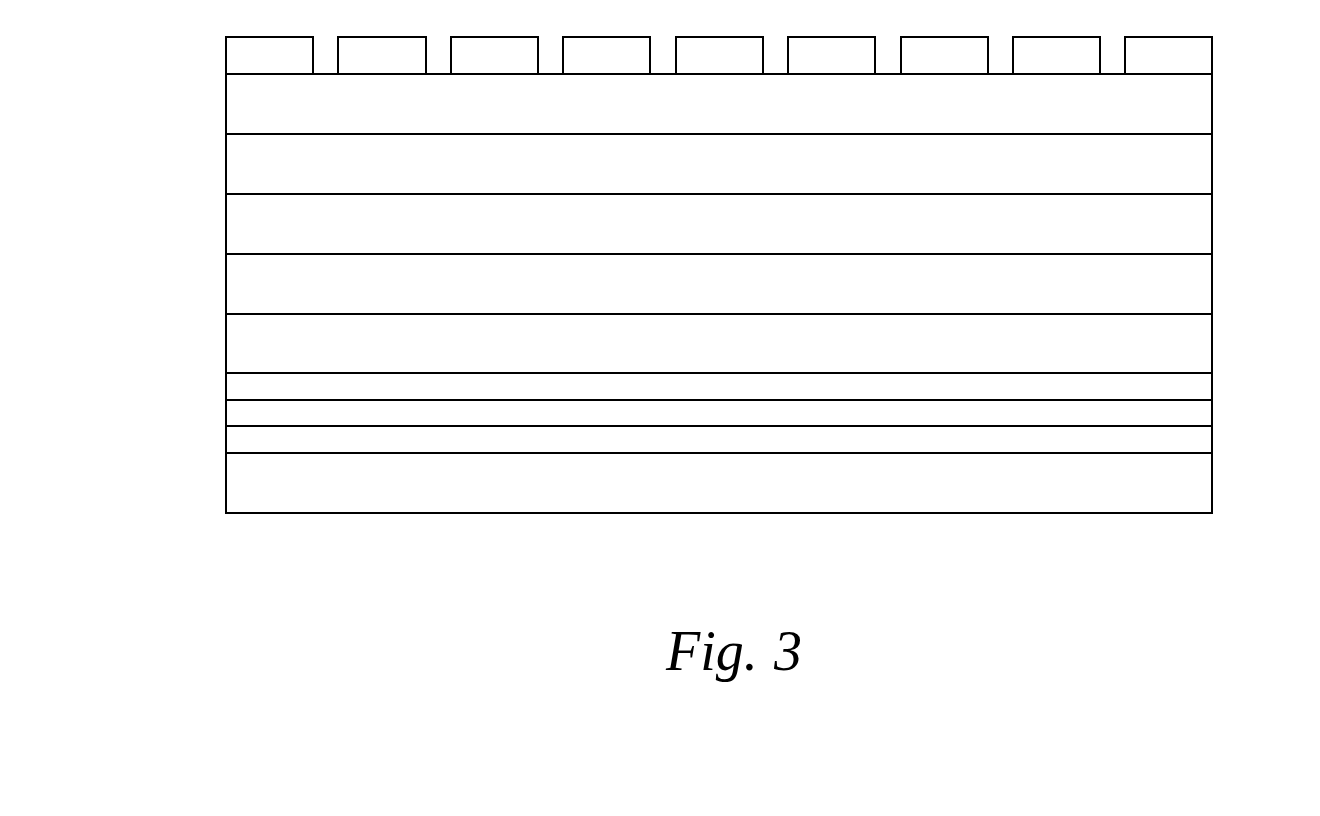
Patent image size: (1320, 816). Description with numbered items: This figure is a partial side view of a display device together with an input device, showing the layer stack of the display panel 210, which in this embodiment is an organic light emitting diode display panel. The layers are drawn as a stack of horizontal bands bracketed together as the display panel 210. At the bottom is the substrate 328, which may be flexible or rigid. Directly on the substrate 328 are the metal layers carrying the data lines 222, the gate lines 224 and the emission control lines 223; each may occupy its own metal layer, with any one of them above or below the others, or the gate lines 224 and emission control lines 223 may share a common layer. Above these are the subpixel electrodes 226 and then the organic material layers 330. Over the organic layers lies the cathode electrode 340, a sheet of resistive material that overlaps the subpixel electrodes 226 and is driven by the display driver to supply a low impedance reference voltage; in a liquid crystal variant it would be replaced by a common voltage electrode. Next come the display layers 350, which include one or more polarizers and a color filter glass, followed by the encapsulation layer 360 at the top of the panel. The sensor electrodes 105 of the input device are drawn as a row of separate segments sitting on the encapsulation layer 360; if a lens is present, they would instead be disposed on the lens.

The sensor electrodes 105 is at (1202, 57).
The display panel 210 is at (177, 68).
The encapsulation layer 360 is at (1202, 109).
The display layers 350 is at (1202, 170).
The cathode electrode 340 is at (1202, 229).
The organic material layers 330 is at (1202, 289).
The subpixel electrodes 226 is at (1202, 350).
The emission control lines 223 is at (1202, 386).
The gate lines 224 is at (1202, 413).
The data lines 222 is at (1202, 438).
The substrate 328 is at (1202, 488).